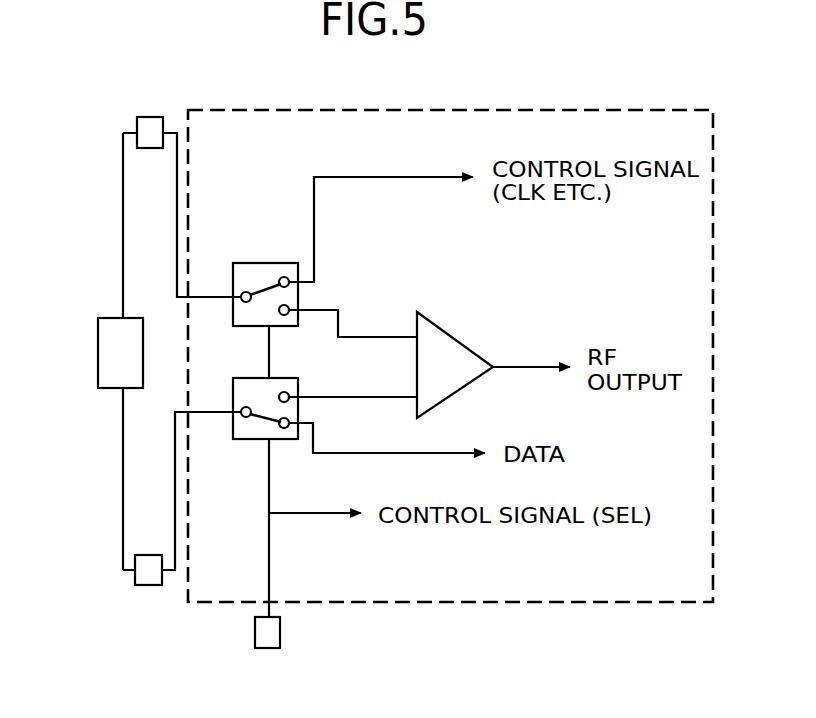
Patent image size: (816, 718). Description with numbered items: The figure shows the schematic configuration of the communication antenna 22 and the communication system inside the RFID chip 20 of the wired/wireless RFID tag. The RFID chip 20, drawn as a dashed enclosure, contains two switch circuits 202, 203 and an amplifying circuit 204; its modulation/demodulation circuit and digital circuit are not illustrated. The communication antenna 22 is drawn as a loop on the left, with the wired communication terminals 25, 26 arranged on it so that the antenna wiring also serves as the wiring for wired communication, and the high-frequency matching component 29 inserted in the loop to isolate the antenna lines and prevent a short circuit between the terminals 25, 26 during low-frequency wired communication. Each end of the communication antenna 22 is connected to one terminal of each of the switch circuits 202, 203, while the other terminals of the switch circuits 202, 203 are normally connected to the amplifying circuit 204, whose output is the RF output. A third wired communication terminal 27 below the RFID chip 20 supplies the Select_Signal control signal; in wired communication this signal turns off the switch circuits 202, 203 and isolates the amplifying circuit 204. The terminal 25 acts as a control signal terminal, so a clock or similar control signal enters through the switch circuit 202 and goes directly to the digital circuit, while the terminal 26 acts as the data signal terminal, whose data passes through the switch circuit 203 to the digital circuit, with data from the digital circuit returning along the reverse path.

The RFID chip 20 is at (450, 110).
The communication antenna 22 is at (123, 238).
The wired communication terminal 25 is at (137, 125).
The wired communication terminal 26 is at (136, 578).
The wired communication terminal 27 is at (257, 642).
The high-frequency matching component 29 is at (113, 340).
The switch circuit 202 is at (247, 271).
The switch circuit 203 is at (248, 437).
The amplifying circuit 204 is at (437, 336).